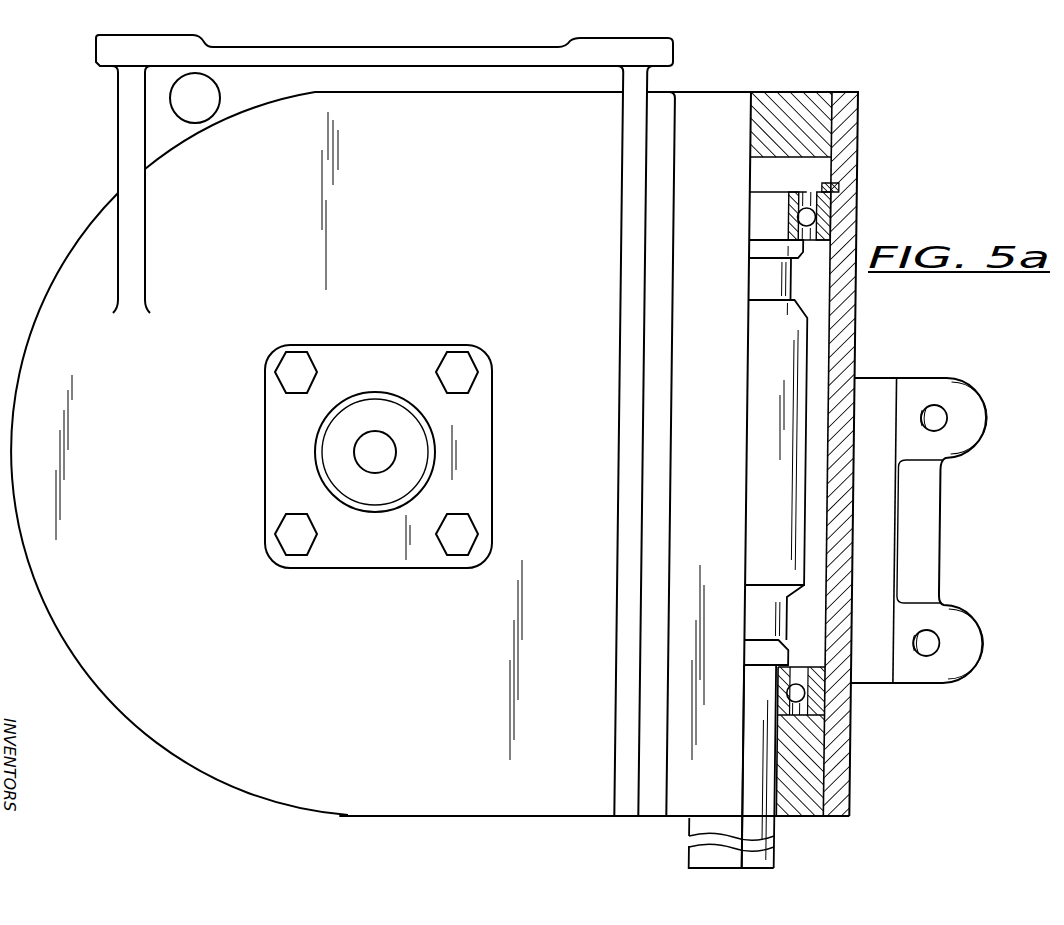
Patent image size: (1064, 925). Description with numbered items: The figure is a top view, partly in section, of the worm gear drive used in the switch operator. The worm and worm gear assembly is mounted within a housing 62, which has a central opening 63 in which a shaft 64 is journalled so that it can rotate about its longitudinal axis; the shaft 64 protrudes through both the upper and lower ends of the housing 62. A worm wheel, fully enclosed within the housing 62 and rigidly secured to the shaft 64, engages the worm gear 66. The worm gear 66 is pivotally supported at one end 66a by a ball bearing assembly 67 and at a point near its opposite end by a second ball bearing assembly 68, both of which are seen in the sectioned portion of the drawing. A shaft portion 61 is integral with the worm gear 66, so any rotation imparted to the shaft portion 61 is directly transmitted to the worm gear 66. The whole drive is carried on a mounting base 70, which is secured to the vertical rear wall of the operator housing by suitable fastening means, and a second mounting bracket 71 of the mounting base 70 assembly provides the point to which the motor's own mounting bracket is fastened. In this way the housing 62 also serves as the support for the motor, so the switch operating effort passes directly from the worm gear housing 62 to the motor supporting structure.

The shaft portion 61 is at (783, 828).
The housing 62 is at (218, 672).
The central opening 63 is at (372, 498).
The shaft 64 is at (415, 467).
The worm gear 66 is at (786, 459).
The end of worm gear 66a is at (768, 206).
The ball bearing assembly 67 is at (818, 224).
The ball bearing assembly 68 is at (812, 697).
The mounting base 70 is at (106, 83).
The second mounting bracket 71 is at (960, 372).